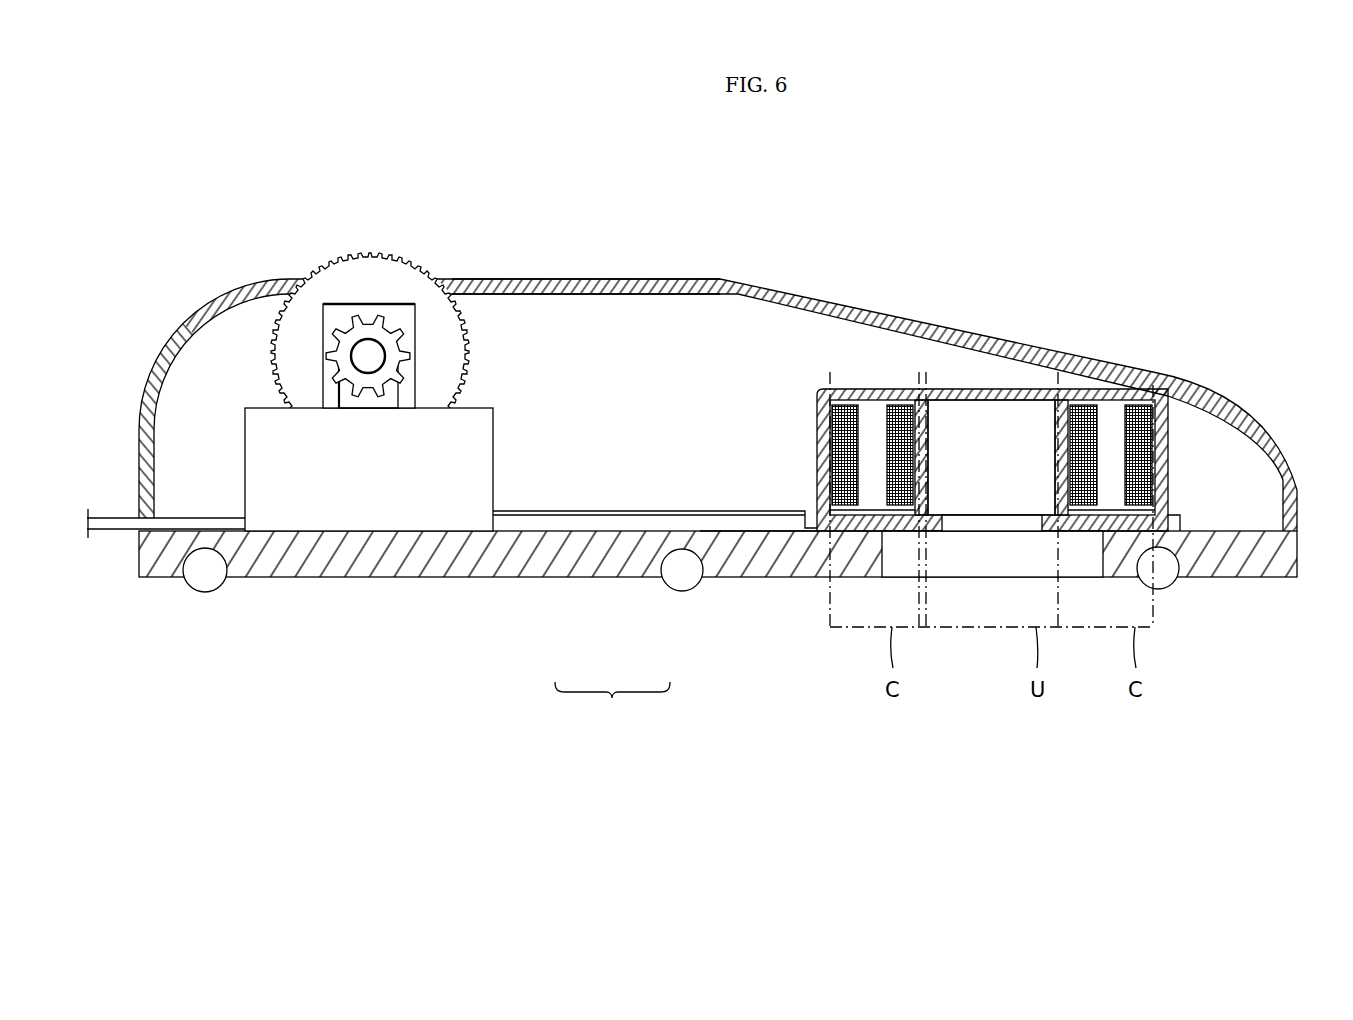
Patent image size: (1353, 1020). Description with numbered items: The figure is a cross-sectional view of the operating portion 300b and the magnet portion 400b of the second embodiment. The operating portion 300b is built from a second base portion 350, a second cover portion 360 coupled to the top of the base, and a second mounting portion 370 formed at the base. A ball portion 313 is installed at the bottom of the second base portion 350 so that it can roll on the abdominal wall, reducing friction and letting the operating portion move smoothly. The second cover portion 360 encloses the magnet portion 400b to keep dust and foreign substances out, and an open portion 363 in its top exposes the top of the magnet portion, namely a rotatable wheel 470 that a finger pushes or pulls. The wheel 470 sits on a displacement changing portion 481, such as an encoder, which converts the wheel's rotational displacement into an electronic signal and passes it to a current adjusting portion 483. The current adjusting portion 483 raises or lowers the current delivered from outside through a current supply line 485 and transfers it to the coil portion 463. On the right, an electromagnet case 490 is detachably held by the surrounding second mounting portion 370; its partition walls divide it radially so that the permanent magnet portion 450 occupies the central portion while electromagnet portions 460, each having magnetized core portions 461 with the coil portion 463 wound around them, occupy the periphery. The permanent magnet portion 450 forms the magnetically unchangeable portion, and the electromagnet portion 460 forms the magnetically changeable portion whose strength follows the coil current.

The ball portion 313 is at (207, 570).
The second base portion 350 is at (627, 552).
The second cover portion 360 is at (565, 297).
The open portion 363 is at (445, 297).
The second mounting portion 370 is at (765, 565).
The operating portion 300b is at (612, 703).
The magnet portion 400b is at (985, 382).
The permanent magnet portion 450 is at (1022, 418).
The electromagnet portion 460 is at (1222, 306).
The magnetized core portion 461 is at (1113, 418).
The coil portion 463 is at (680, 510).
The wheel 470 is at (383, 280).
The displacement changing portion 481 is at (333, 312).
The current adjusting portion 483 is at (263, 423).
The current supply line 485 is at (123, 517).
The electromagnet case 490 is at (817, 425).